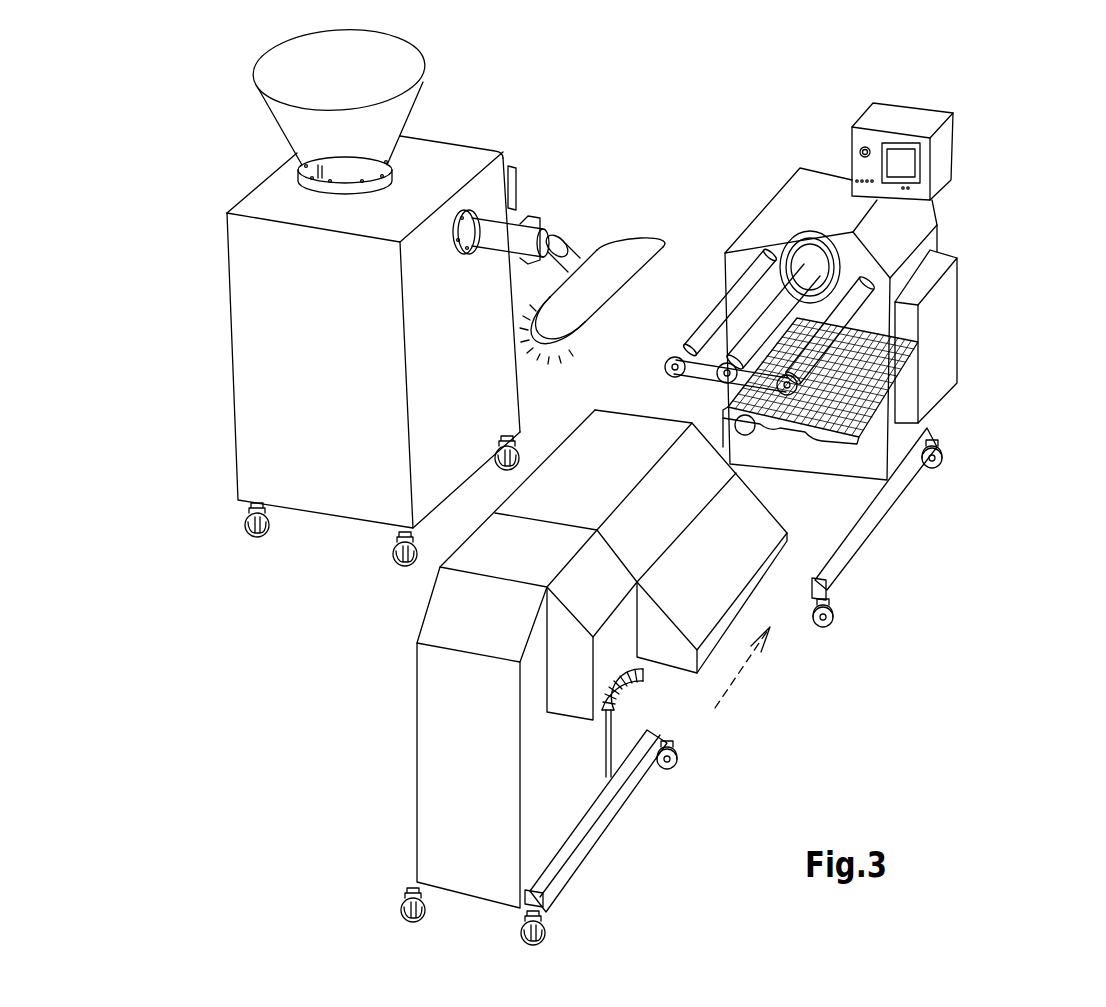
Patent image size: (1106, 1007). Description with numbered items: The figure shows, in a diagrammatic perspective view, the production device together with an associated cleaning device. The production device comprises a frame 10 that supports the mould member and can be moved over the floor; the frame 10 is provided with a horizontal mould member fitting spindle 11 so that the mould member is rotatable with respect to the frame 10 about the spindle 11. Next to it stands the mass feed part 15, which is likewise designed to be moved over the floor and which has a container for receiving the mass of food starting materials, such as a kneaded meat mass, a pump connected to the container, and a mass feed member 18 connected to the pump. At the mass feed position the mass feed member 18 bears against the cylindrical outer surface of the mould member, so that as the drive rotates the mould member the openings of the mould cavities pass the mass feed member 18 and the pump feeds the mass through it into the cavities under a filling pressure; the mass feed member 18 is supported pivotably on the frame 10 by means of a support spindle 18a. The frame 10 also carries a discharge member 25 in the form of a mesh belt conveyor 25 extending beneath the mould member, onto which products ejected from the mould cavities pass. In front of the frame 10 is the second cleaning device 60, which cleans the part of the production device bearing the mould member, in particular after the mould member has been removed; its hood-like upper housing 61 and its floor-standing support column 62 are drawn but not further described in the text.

The frame 10 is at (980, 304).
The mould member fitting spindle 11 is at (768, 333).
The mass feed part 15 is at (498, 132).
The mass feed member 18 is at (617, 265).
The support spindle 18a is at (712, 325).
The discharge member (mesh belt conveyor) 25 is at (800, 441).
The second cleaning device 60 is at (803, 745).
The hood 61 is at (725, 582).
The stand 62 is at (650, 672).